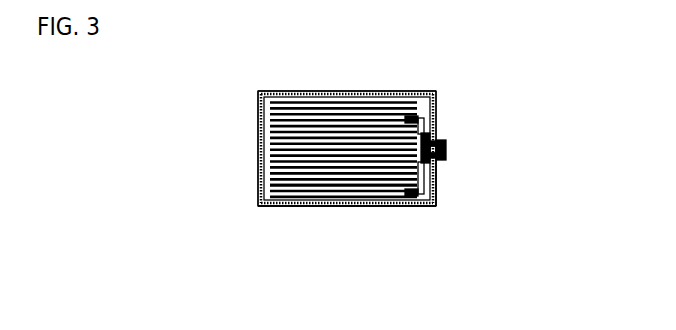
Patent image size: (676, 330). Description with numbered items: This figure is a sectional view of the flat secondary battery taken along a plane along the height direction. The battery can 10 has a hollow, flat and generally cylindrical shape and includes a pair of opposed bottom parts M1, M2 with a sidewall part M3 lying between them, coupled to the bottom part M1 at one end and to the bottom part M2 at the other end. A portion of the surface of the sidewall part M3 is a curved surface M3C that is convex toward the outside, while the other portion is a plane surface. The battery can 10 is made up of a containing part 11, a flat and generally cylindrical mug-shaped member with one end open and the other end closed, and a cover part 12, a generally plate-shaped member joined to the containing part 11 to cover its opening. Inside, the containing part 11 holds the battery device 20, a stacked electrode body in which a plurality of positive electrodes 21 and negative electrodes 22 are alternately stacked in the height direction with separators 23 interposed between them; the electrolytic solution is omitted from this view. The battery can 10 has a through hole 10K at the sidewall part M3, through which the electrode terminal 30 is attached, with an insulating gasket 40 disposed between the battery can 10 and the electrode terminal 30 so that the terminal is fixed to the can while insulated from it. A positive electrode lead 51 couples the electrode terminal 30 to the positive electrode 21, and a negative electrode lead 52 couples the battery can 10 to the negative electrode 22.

The battery can 10 is at (373, 163).
The containing part 11 is at (423, 206).
The cover part 12 is at (259, 102).
The battery device 20 is at (297, 199).
The positive electrode 21 is at (323, 206).
The negative electrode 22 is at (353, 206).
The separator 23 is at (390, 206).
The electrode terminal 30 is at (443, 134).
The gasket 40 is at (446, 143).
The positive electrode lead 51 is at (440, 124).
The negative electrode lead 52 is at (437, 206).
The through hole 10K is at (447, 151).
The bottom part M1 is at (392, 91).
The bottom part M2 is at (277, 206).
The sidewall part M3 is at (437, 193).
The curved surface M3C is at (259, 178).